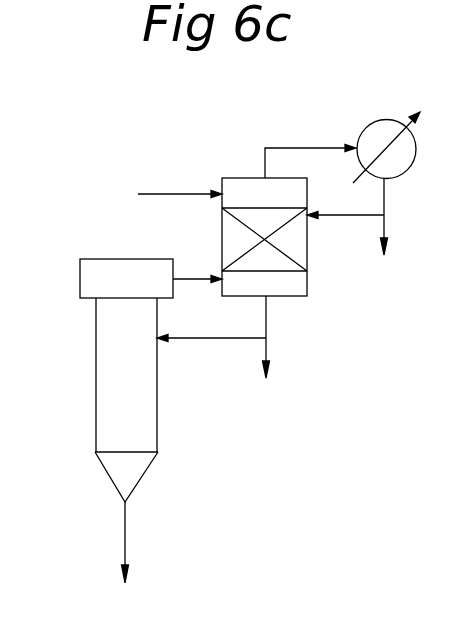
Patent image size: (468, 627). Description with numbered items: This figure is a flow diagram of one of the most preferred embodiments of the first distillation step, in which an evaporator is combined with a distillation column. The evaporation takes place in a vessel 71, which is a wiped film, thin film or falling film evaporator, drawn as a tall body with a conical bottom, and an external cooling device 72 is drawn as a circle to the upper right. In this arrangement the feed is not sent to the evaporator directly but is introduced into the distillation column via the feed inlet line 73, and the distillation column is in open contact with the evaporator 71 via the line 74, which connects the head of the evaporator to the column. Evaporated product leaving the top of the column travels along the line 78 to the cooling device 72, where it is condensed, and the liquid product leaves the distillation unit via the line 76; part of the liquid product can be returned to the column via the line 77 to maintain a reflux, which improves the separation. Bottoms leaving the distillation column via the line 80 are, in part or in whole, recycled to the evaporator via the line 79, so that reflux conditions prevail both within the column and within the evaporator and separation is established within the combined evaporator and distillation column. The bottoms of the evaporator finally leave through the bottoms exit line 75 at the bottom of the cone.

The vessel for evaporation 71 is at (110, 415).
The external cooling device 72 is at (380, 132).
The feed inlet line 73 is at (175, 192).
The product exit line 74 is at (198, 277).
The bottoms exit line 75 is at (125, 545).
The liquid product line 76 is at (387, 228).
The recycle line 77 is at (343, 218).
The reactor overhead line to compressor 78 is at (304, 148).
The recycle line to evaporator 79 is at (210, 342).
The distillation column bottoms line 80 is at (267, 345).